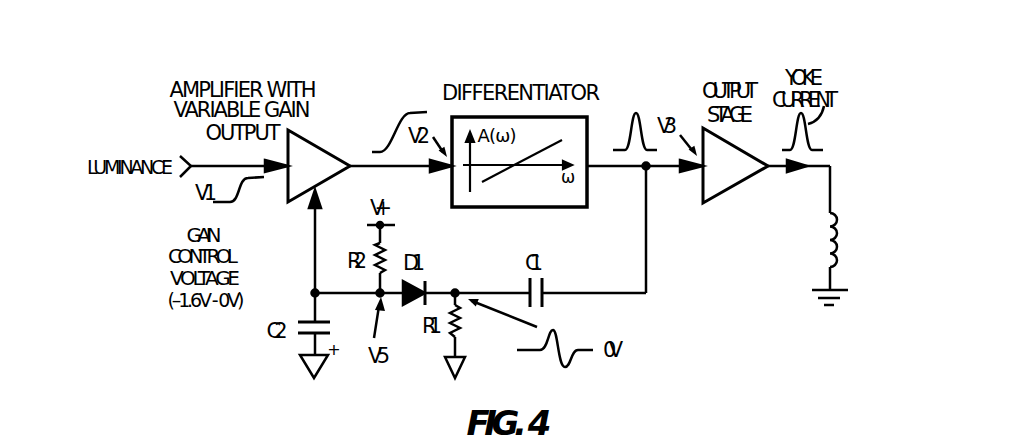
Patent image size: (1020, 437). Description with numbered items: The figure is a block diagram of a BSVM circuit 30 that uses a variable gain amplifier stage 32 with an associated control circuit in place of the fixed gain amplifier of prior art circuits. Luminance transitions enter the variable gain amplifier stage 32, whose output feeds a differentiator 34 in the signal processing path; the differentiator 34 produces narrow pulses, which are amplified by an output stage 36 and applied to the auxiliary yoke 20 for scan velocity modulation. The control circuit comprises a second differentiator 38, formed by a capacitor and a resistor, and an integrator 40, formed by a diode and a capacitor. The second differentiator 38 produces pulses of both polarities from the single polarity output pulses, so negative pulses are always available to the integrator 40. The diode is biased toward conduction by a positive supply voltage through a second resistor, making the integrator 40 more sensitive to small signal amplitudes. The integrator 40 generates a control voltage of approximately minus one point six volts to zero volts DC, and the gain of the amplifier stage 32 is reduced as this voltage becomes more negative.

The variable gain amplifier stage 32 is at (336, 152).
The differentiator 34 is at (587, 188).
The output stage 36 is at (738, 190).
The auxiliary yoke 20 is at (830, 240).
The BSVM circuit 30 is at (567, 252).
The second differentiator 38 is at (470, 338).
The integrator 40 is at (340, 322).